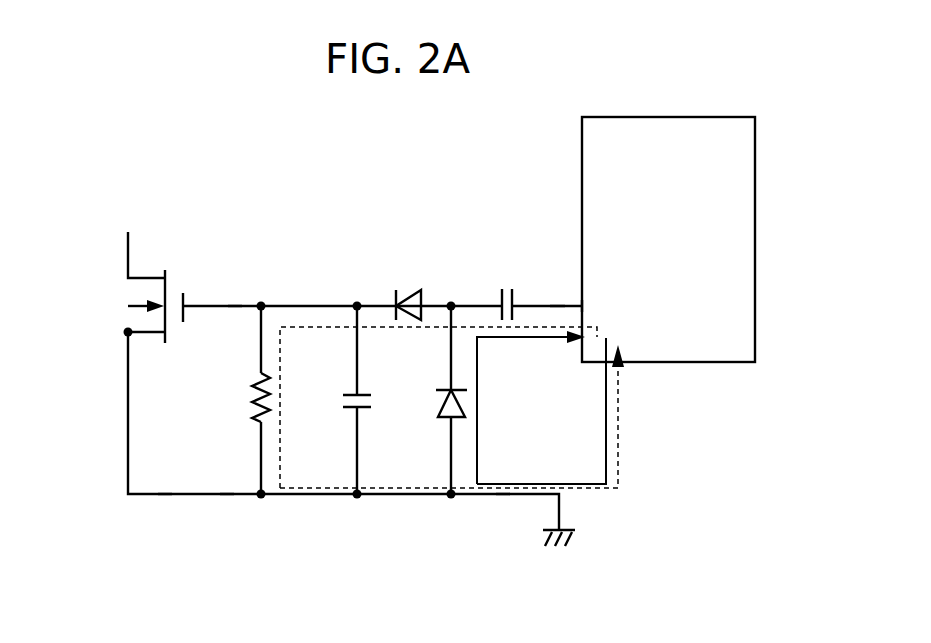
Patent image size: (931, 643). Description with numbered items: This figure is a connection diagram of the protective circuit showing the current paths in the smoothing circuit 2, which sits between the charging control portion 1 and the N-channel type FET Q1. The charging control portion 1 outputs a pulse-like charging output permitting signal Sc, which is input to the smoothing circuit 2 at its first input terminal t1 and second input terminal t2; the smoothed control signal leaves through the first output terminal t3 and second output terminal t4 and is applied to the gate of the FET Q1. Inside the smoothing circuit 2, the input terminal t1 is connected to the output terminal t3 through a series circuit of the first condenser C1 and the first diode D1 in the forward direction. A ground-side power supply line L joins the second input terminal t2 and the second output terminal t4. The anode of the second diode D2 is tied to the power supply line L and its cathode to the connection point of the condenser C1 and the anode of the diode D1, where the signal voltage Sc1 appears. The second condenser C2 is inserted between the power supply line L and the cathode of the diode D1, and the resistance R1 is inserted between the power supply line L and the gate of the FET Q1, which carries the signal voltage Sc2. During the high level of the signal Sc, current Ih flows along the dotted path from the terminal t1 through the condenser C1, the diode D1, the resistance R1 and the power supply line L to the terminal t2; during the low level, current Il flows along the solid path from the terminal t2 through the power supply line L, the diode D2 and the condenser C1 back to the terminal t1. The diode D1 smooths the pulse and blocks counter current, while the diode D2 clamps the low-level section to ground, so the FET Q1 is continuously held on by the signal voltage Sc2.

The charging control portion 1 is at (722, 117).
The smoothing circuit 2 is at (324, 220).
The N-channel type FET Q1 is at (178, 278).
The first input terminal t1 is at (557, 306).
The second input terminal t2 is at (503, 496).
The first output terminal t3 is at (235, 306).
The second output terminal t4 is at (165, 496).
The charging output permitting signal Sc is at (597, 304).
The signal voltage at connection point of condenser C1 and anode of diode D1 Sc1 is at (451, 305).
The signal voltage with respect to gate of FET Q1 Sc2 is at (262, 305).
The first diode D1 is at (408, 290).
The second diode D2 is at (442, 400).
The first condenser C1 is at (508, 289).
The second condenser C2 is at (343, 398).
The resistance R1 is at (253, 418).
The power supply line L is at (227, 496).
The current Ih is at (618, 405).
The current Il is at (606, 455).